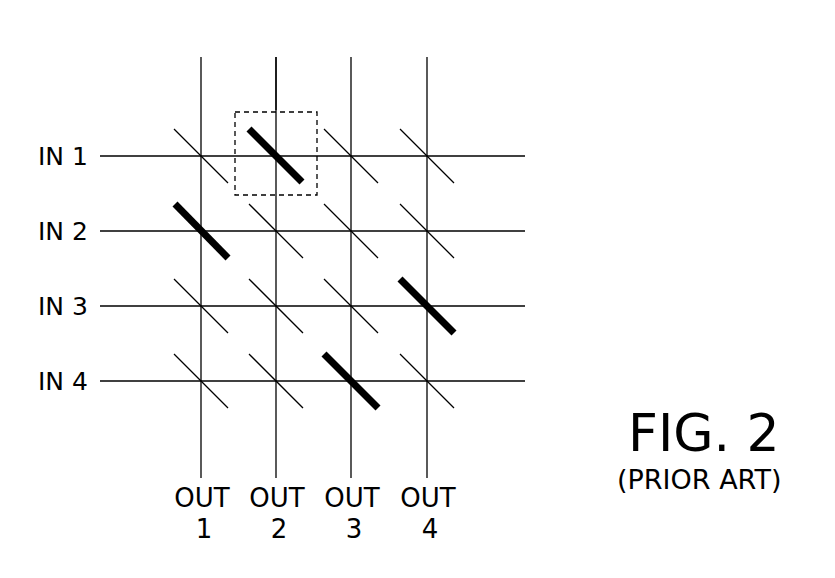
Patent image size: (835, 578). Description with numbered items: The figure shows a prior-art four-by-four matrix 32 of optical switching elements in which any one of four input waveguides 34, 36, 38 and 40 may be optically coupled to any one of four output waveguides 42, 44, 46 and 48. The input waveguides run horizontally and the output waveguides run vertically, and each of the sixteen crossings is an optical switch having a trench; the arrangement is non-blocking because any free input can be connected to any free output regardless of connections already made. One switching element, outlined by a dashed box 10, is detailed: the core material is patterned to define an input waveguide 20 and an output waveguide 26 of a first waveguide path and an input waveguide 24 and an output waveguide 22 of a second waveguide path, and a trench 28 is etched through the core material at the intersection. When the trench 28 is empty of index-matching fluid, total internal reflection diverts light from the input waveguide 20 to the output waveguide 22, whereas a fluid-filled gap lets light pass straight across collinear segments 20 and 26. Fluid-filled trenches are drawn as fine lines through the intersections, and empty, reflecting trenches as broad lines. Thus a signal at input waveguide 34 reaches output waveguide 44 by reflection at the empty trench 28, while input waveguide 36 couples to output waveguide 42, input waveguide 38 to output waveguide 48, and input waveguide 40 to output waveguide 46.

The switch unit cell 10 is at (293, 112).
The input waveguide 20 is at (219, 153).
The output waveguide 22 is at (268, 218).
The input waveguide 24 is at (272, 61).
The output waveguide 26 is at (336, 141).
The trench 28 is at (296, 169).
The 4×4 matrix 32 is at (540, 104).
The input waveguide 34 is at (126, 155).
The input waveguide 36 is at (127, 230).
The third input waveguide 38 is at (127, 305).
The fourth input waveguide 40 is at (127, 380).
The first output waveguide 42 is at (203, 443).
The output waveguide 44 is at (278, 443).
The third output waveguide 46 is at (353, 443).
The fourth output waveguide 48 is at (429, 443).